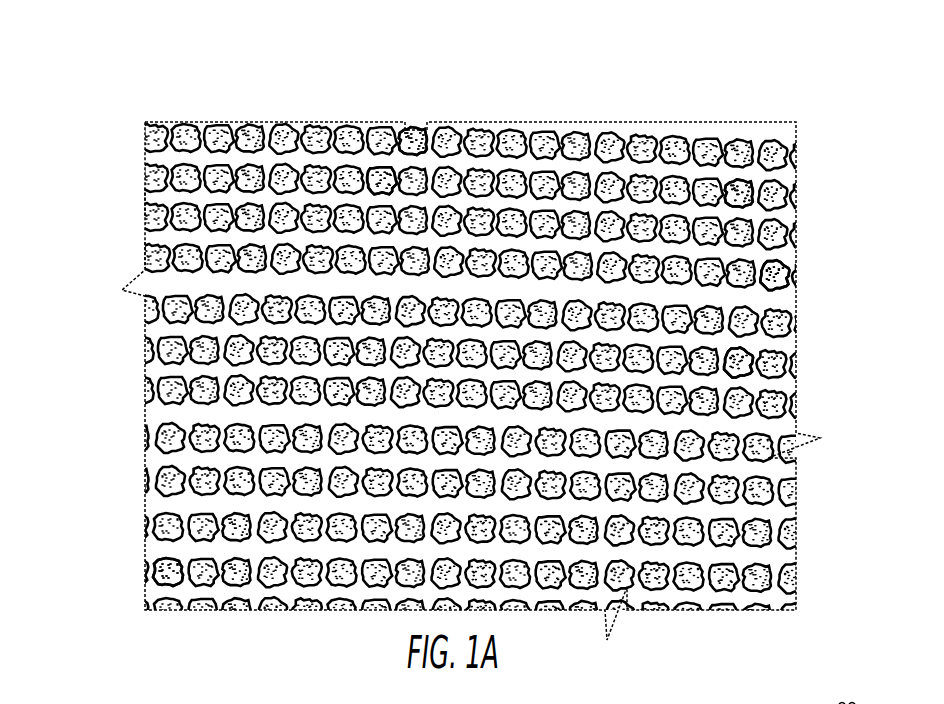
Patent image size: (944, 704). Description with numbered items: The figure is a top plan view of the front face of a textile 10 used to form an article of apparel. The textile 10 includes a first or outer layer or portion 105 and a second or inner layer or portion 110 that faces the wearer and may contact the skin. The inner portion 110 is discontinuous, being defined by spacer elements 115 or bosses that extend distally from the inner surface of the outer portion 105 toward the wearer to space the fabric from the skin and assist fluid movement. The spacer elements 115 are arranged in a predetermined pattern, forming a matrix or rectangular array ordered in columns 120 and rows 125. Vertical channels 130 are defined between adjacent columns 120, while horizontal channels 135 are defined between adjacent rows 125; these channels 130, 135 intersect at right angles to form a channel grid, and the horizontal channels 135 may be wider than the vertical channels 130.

The textile 10 is at (188, 73).
The first or outer layer or portion 105 is at (763, 375).
The second or inner layer or portion 110 is at (780, 277).
The spacer elements 115 is at (748, 186).
The columns 120 is at (348, 120).
The rows 125 is at (143, 254).
The first or vertical channels 130 is at (397, 180).
The horizontal channels 135 is at (167, 203).